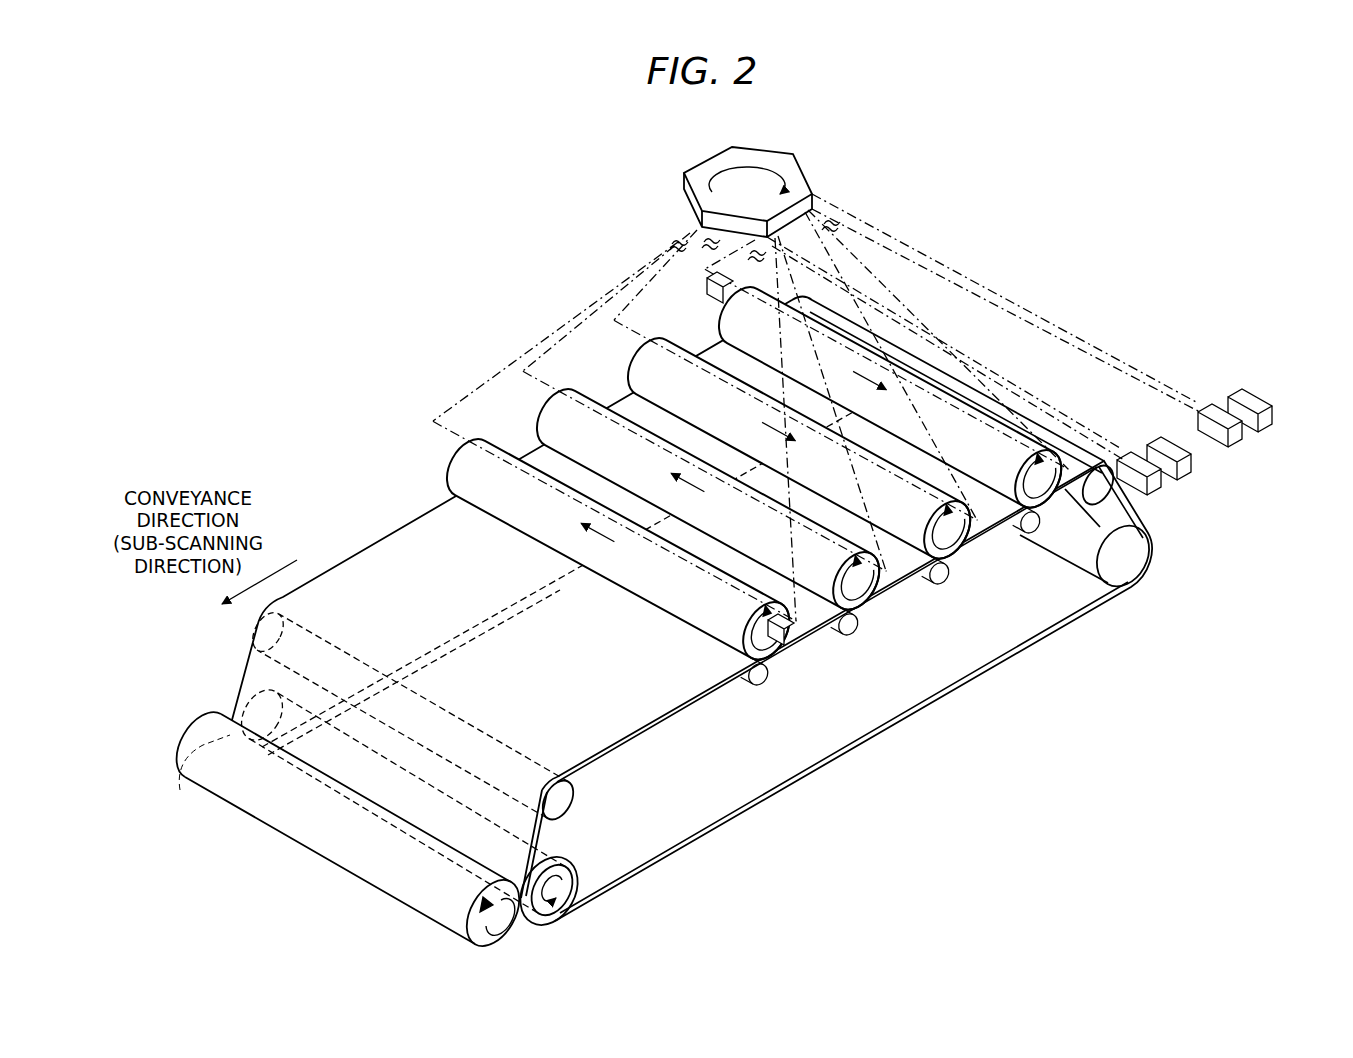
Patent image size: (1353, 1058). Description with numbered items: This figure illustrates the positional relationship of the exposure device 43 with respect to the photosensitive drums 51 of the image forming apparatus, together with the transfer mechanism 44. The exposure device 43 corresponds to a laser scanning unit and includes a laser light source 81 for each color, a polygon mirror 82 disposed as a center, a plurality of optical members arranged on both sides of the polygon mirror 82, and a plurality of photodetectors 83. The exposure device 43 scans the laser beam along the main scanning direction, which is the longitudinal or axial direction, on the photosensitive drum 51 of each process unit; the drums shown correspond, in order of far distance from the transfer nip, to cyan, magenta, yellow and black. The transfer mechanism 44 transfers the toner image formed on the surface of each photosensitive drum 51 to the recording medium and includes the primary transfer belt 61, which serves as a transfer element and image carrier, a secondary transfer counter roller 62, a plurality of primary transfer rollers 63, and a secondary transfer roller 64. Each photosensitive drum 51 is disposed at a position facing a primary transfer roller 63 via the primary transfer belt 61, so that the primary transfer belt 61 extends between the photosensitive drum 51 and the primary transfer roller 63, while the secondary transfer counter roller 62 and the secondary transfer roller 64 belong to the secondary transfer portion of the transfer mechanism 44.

The exposure device 43 is at (1028, 240).
The transfer mechanism 44 is at (367, 462).
The photosensitive drum 51 is at (454, 470).
The primary transfer belt 61 is at (882, 735).
The secondary transfer counter roller 62 is at (571, 902).
The primary transfer roller 63 is at (762, 687).
The secondary transfer roller 64 is at (217, 803).
The laser light source 81 is at (1160, 487).
The polygon mirror 82 is at (728, 160).
The photodetector 83 is at (707, 290).